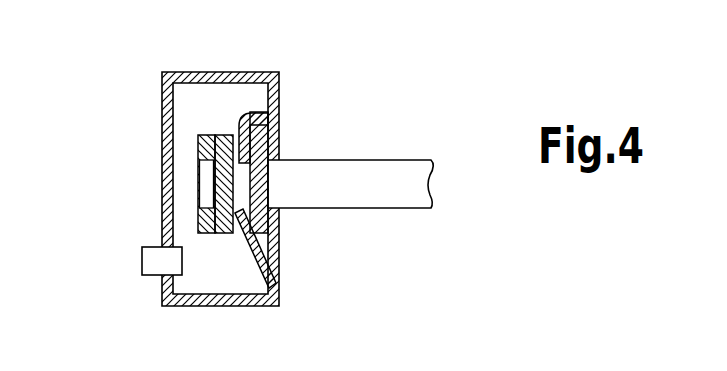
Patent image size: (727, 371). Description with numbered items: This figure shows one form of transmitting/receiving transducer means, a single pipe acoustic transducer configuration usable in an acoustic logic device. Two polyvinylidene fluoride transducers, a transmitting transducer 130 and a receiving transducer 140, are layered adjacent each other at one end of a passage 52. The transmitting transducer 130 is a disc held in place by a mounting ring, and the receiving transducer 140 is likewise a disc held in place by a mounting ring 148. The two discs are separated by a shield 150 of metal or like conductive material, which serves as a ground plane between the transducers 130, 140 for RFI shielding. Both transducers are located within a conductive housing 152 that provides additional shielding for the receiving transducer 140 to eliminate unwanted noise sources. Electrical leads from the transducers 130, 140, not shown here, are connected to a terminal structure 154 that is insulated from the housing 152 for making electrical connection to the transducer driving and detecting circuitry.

The conductive housing 152 is at (161, 90).
The shield 150 is at (248, 114).
The mounting ring 148 is at (202, 155).
The receiving transducer 140 is at (203, 198).
The transmitting transducer 130 is at (270, 168).
The passage 52 is at (378, 198).
The terminal structure 154 is at (143, 273).